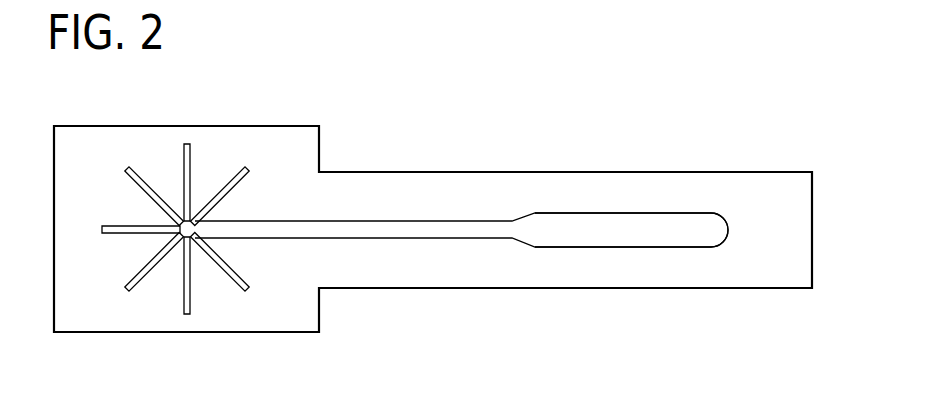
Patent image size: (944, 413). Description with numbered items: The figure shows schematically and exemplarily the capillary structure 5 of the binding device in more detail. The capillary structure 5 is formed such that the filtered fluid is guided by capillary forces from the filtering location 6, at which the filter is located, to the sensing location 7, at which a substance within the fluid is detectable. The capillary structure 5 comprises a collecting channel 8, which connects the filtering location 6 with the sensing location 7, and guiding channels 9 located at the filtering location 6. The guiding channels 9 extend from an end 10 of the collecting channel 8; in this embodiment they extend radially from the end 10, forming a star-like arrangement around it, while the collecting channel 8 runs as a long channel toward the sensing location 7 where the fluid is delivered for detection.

The capillary structure 5 is at (92, 153).
The filtering location 6 is at (208, 298).
The sensing location 7 is at (634, 235).
The collecting channel 8 is at (395, 235).
The guiding channels 9 is at (116, 232).
The end of the connecting channel 10 is at (207, 228).